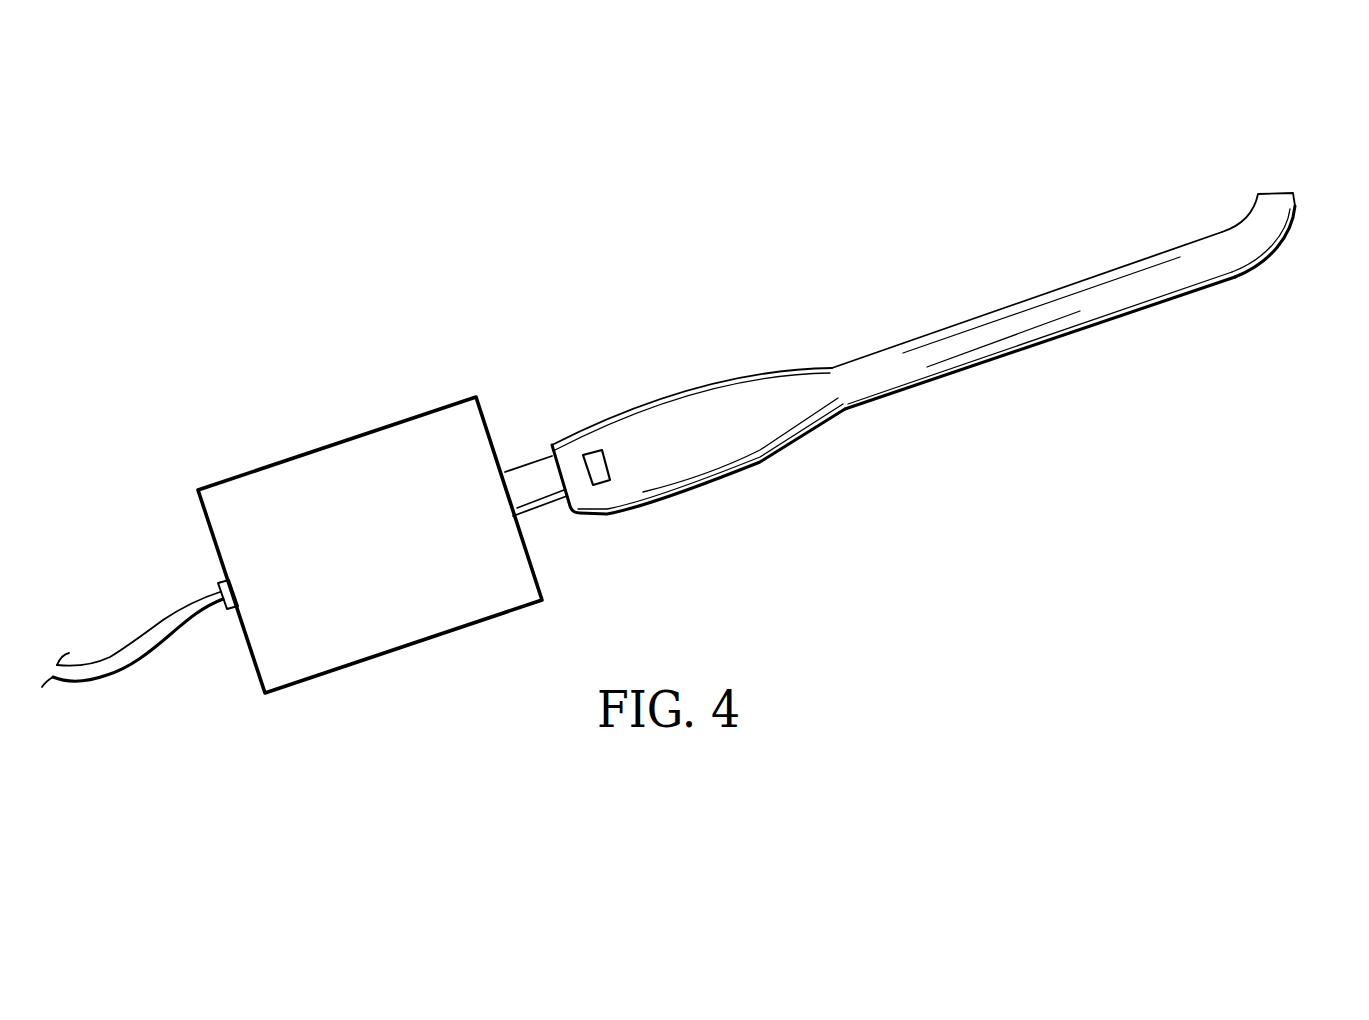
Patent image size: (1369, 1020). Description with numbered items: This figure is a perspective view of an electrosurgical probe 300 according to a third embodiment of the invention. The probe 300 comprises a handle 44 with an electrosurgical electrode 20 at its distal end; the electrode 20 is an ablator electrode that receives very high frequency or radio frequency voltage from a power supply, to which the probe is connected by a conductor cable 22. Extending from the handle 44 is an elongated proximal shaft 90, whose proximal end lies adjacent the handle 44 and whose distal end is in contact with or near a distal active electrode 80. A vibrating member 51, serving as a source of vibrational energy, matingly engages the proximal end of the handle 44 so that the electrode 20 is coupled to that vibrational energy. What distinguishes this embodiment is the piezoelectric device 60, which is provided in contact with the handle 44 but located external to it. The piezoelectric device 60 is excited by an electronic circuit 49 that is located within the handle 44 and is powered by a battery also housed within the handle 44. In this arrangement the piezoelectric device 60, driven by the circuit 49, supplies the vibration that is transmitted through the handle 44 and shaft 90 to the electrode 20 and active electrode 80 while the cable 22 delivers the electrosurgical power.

The electrosurgical probe 300 is at (758, 255).
The electrosurgical electrode 20 is at (910, 306).
The conductor cable 22 is at (115, 652).
The handle 44 is at (656, 416).
The electronic circuit 49 is at (598, 467).
The vibrating member 51 is at (530, 477).
The piezoelectric device 60 is at (363, 453).
The distal active electrode 80 is at (1267, 226).
The elongated proximal shaft 90 is at (882, 372).